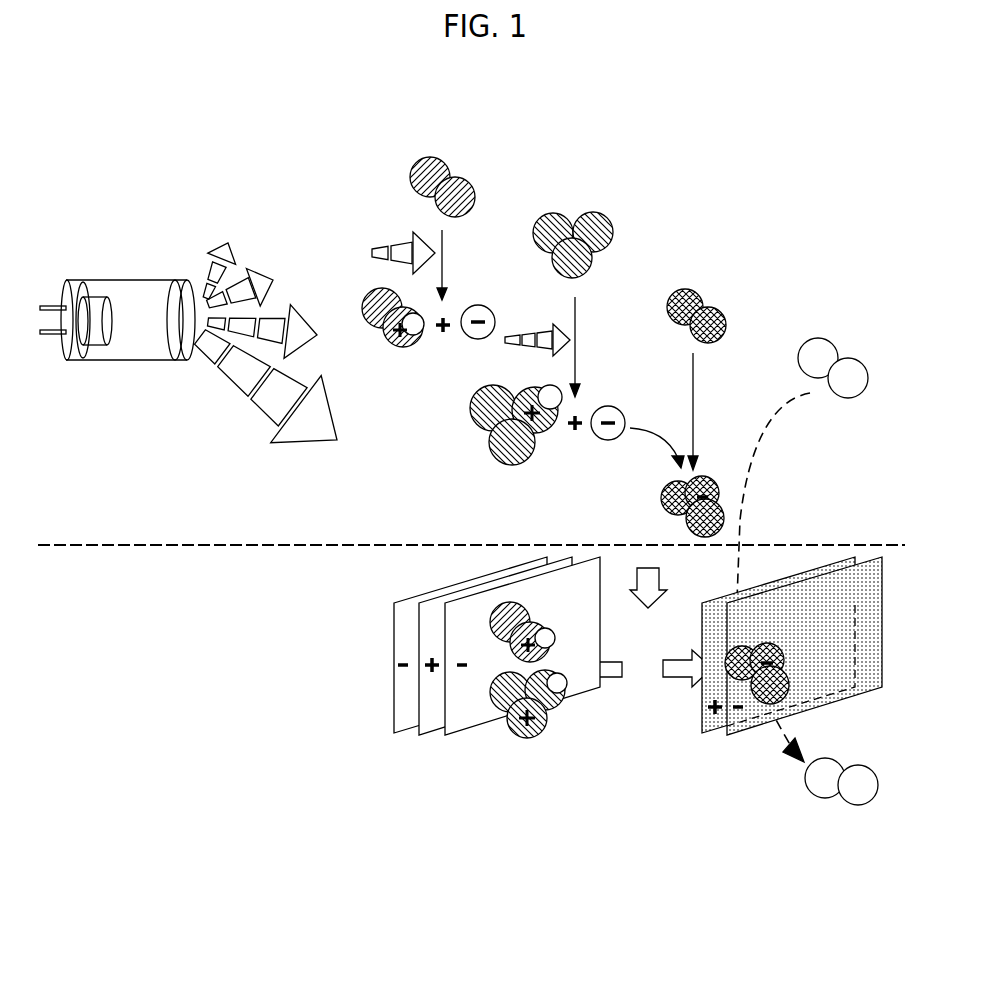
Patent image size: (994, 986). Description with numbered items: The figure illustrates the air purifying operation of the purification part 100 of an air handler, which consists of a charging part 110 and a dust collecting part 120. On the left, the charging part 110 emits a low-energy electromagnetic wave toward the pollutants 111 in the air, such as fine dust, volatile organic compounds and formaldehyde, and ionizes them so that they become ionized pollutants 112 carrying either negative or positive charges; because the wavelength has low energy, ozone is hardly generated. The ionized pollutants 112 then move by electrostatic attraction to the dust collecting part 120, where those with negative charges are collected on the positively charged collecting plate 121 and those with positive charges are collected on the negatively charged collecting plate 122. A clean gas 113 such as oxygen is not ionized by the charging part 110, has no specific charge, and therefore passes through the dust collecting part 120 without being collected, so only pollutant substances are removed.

The purification part 100 is at (124, 128).
The charging part 110 is at (131, 268).
The pollutants 111 is at (462, 160).
The ionized pollutants 112 is at (387, 348).
The clean gas 113 is at (852, 346).
The dust collecting part 120 is at (383, 699).
The positively charged collecting plate 121 is at (433, 727).
The negatively charged collecting plate 122 is at (485, 718).